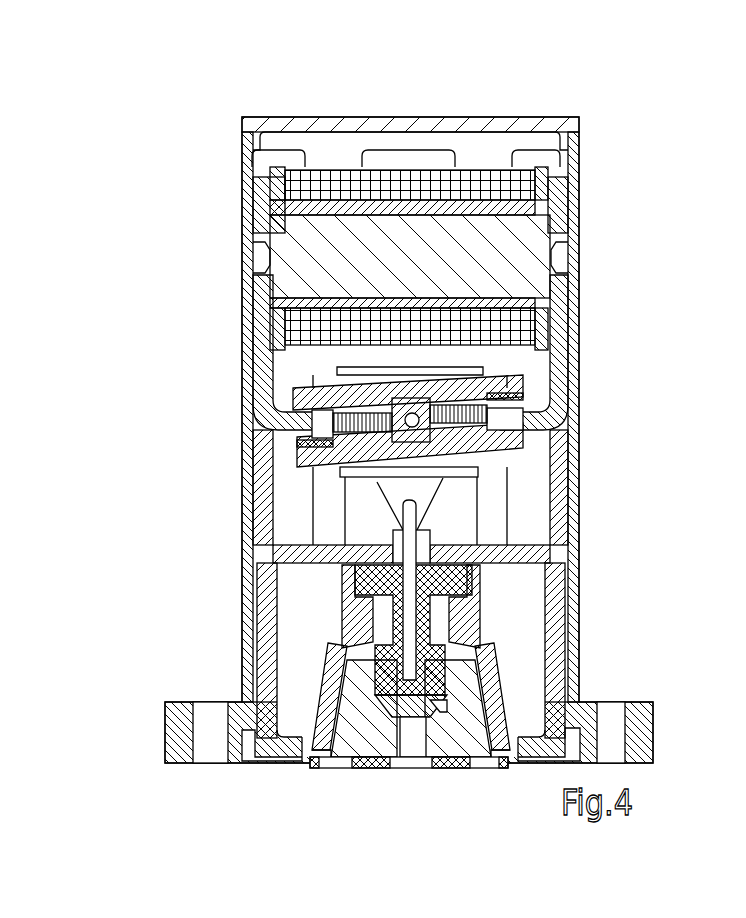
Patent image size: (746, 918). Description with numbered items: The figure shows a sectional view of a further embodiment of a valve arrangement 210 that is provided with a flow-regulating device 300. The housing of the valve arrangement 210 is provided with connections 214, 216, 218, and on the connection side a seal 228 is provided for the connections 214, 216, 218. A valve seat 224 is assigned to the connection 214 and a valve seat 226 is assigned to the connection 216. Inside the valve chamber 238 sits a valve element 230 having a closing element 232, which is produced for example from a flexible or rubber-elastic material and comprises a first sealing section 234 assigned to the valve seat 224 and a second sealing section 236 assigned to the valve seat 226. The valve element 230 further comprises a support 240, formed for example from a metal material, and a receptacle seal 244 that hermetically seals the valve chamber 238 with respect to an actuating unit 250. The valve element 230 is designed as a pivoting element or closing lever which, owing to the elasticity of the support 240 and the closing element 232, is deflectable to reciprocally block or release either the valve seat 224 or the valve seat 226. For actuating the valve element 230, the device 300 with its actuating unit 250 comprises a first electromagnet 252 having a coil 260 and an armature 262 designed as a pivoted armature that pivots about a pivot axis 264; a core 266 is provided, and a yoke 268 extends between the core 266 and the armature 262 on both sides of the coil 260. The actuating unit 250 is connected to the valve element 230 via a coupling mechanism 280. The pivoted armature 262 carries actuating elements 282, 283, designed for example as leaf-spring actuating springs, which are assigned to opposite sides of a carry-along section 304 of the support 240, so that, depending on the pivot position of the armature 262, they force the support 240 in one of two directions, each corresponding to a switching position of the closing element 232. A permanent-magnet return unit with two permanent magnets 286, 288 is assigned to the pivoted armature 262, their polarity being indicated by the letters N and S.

The flow-regulating device 300 is at (570, 102).
The valve arrangement 210 is at (247, 777).
The actuating unit 250 is at (358, 108).
The first electromagnet 252 is at (463, 160).
The coil 260 is at (405, 176).
The core 266 is at (520, 248).
The yoke 268 is at (560, 348).
The armature 262 is at (343, 393).
The pivot axis 264 is at (473, 428).
The permanent magnet 286 is at (357, 427).
The permanent magnet 288 is at (470, 417).
The actuating element 282 is at (400, 495).
The actuating element 283 is at (443, 487).
The coupling mechanism 280 is at (378, 530).
The carry-along section 304 is at (420, 528).
The receptacle seal 244 is at (560, 570).
The support 240 is at (462, 628).
The valve element 230 is at (437, 613).
The closing element 232 is at (370, 580).
The first section 234 is at (373, 633).
The valve seat 224 is at (335, 655).
The valve seat 226 is at (462, 662).
The second section 236 is at (445, 683).
The valve chamber 238 is at (447, 747).
The connection 218 is at (411, 745).
The seal 228 is at (378, 752).
The connection 214 is at (337, 745).
The connection 216 is at (480, 745).